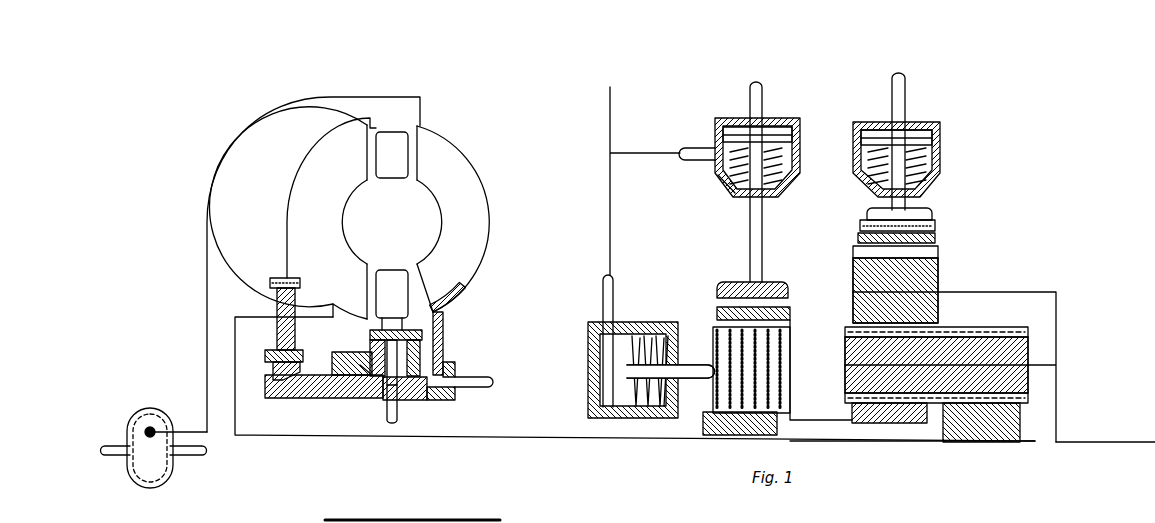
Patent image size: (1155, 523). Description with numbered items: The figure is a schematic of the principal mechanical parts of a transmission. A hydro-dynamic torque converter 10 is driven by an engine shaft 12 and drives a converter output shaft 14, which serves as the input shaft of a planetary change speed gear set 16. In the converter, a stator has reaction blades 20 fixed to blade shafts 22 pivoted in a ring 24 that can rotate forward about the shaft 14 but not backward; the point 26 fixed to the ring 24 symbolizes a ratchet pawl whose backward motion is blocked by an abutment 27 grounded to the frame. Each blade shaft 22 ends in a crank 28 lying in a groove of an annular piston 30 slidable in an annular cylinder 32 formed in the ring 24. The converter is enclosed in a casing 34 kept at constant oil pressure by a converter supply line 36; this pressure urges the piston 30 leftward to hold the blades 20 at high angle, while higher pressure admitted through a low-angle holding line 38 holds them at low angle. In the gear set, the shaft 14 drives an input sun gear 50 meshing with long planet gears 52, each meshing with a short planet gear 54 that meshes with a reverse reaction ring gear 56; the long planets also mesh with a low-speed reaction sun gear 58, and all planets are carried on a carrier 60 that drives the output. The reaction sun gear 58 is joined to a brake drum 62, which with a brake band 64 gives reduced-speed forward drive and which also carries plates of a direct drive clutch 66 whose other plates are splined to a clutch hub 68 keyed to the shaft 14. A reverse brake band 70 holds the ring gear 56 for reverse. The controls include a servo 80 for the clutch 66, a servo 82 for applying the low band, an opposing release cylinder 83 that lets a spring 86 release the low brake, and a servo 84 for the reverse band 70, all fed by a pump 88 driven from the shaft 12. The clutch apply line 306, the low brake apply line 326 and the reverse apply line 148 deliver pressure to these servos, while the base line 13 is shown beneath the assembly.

The hydro-dynamic torque converter 10 is at (467, 158).
The engine shaft 12 is at (205, 428).
The base line 13 is at (1106, 441).
The converter output shaft 14 is at (500, 440).
The planetary change speed gear set 16 is at (856, 442).
The reaction blades 20 is at (392, 277).
The blade shafts 22 is at (370, 334).
The ring 24 is at (370, 322).
The ratchet pawl point 26 is at (340, 362).
The abutment 27 is at (270, 372).
The crank 28 is at (443, 358).
The annular piston 30 is at (443, 340).
The annular cylinder 32 is at (425, 396).
The casing 34 is at (450, 304).
The converter supply line 36 is at (488, 382).
The low-angle holding line 38 is at (385, 416).
The input sun gear 50 is at (995, 430).
The long planet gears 52 is at (968, 328).
The short planet gear 54 is at (940, 272).
The reverse reaction ring gear 56 is at (932, 239).
The low-speed reaction sun gear 58 is at (852, 412).
The carrier 60 is at (1056, 376).
The brake drum 62 is at (718, 313).
The brake band 64 is at (732, 286).
The clutch 66 is at (718, 348).
The clutch hub 68 is at (732, 437).
The reverse brake band 70 is at (925, 212).
The clutch servo 80 is at (600, 352).
The low brake apply servo 82 is at (737, 130).
The low brake release cylinder 83 is at (722, 172).
The reverse servo 84 is at (872, 132).
The spring 86 is at (732, 192).
The pump 88 is at (165, 456).
The reverse apply line 148 is at (907, 86).
The clutch apply line 306 is at (612, 95).
The low brake apply line 326 is at (764, 92).